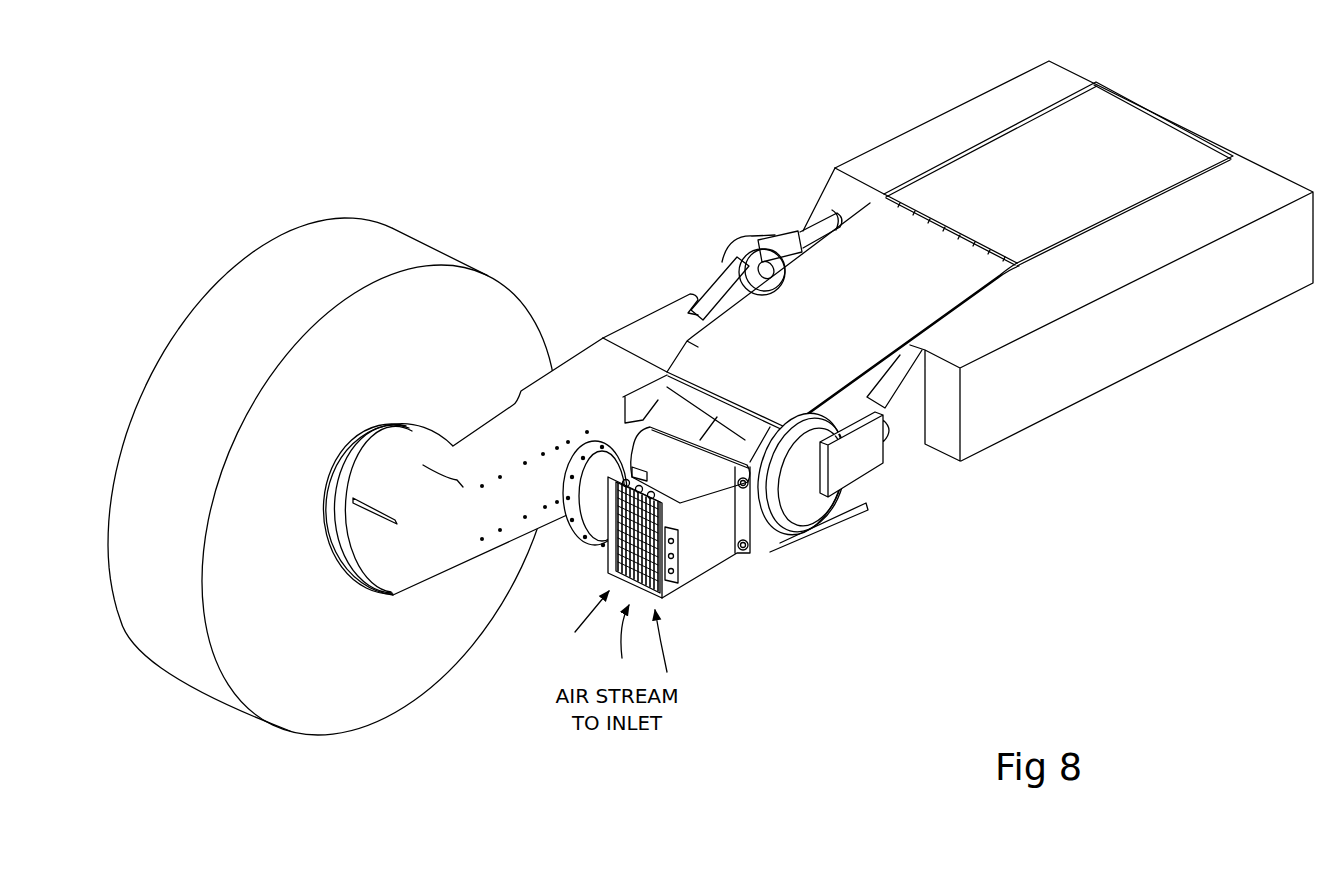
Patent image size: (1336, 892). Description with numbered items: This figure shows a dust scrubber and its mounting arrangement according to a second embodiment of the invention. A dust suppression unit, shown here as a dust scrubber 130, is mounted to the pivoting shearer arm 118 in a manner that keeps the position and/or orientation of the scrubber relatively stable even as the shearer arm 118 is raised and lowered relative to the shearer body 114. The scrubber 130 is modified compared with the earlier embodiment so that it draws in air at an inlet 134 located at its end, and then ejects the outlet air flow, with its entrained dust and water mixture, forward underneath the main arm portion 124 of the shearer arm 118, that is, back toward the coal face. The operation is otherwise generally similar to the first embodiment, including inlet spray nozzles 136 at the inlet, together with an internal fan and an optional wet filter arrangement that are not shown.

The shearer body 114 is at (1133, 333).
The shearer arm 118 is at (651, 301).
The main arm portion 124 is at (527, 426).
The dust scrubber 130 is at (714, 542).
The inlet 134 is at (615, 552).
The inlet spray nozzles 136 is at (679, 575).